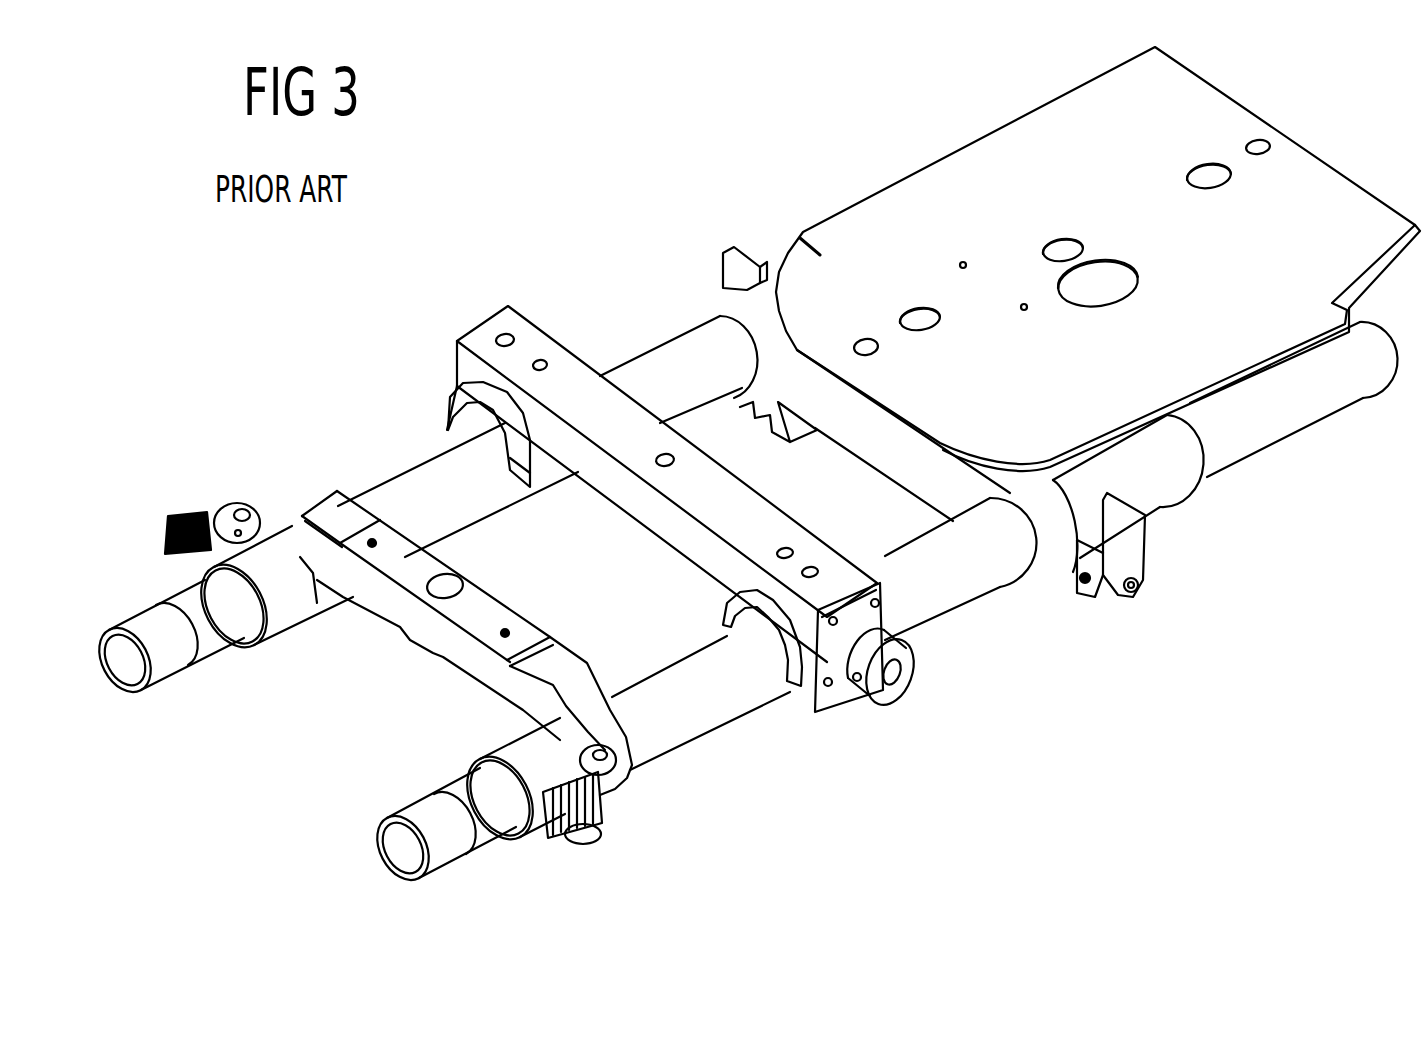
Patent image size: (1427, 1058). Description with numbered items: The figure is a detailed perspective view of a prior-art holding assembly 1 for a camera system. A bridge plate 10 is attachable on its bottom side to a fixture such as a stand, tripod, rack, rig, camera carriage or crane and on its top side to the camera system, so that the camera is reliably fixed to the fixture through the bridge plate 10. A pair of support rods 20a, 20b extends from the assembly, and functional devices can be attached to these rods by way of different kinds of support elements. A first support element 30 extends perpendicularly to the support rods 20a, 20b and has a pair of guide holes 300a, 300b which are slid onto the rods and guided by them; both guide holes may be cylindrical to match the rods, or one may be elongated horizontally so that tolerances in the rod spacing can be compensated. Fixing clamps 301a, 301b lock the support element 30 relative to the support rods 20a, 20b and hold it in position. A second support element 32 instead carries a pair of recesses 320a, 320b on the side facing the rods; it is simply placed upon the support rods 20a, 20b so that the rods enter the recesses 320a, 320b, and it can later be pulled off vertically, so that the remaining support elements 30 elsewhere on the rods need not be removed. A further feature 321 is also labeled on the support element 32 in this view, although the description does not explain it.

The holding assembly 1 is at (1003, 678).
The bridge plate 10 is at (1337, 202).
The support rod 20a is at (710, 720).
The support rod 20b is at (453, 513).
The support element 30 is at (438, 643).
The support element 32 is at (678, 533).
The guide hole 300a is at (533, 827).
The guide hole 300b is at (263, 633).
The fixing clamp 301a is at (607, 797).
The fixing clamp 301b is at (210, 517).
The recess 320a is at (738, 623).
The recess 320b is at (463, 418).
The bore / knob 321 is at (677, 463).